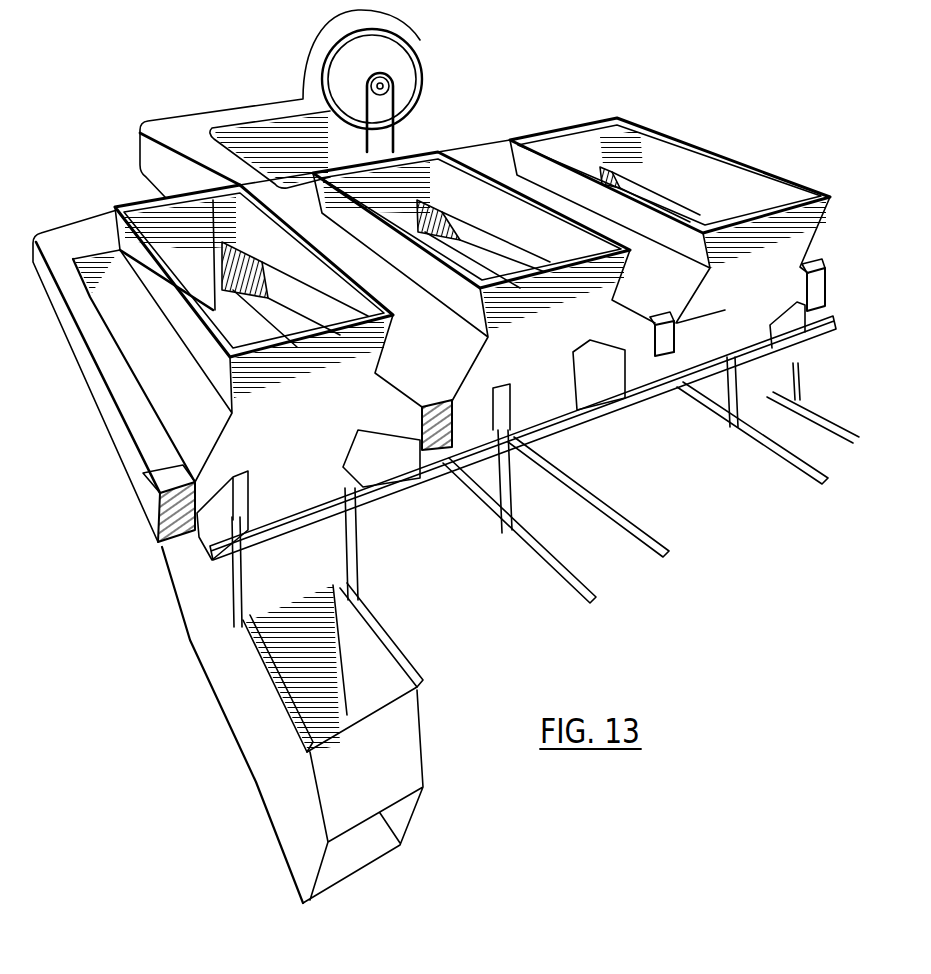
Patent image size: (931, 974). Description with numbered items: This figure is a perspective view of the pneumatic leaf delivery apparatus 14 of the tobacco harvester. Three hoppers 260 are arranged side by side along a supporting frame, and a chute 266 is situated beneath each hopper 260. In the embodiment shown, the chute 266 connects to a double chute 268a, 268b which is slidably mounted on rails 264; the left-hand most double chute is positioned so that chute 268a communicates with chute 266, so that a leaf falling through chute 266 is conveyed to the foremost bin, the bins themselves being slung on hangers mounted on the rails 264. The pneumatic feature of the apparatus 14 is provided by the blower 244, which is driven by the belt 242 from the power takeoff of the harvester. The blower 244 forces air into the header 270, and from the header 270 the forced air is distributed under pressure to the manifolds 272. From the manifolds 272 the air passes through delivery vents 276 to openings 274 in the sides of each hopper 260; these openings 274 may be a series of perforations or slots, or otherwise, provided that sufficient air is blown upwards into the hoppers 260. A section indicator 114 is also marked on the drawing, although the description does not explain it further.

The leaf delivery apparatus 14 is at (112, 185).
The direction arrow 114 is at (244, 215).
The belt 242 is at (397, 140).
The blower 244 is at (362, 20).
The hopper 260 is at (203, 290).
The rails 264 is at (538, 558).
The chute 266 is at (312, 587).
The double chute 268a is at (190, 648).
The double chute 268b is at (363, 667).
The header 270 is at (253, 110).
The manifolds 272 is at (142, 483).
The openings 274 is at (272, 285).
The delivery vents 276 is at (207, 421).